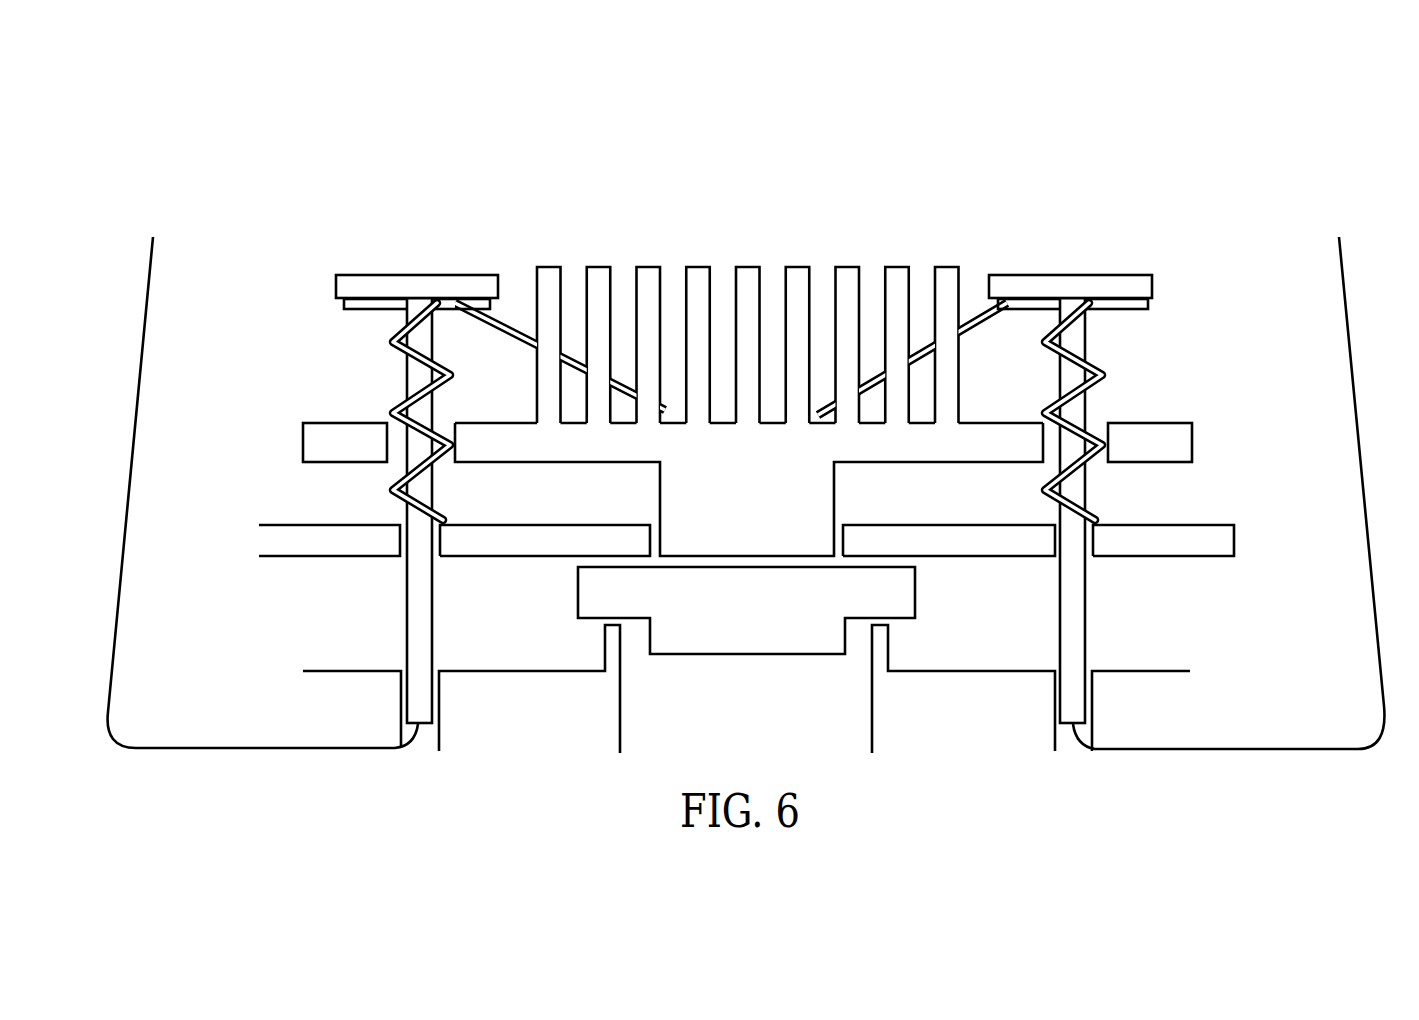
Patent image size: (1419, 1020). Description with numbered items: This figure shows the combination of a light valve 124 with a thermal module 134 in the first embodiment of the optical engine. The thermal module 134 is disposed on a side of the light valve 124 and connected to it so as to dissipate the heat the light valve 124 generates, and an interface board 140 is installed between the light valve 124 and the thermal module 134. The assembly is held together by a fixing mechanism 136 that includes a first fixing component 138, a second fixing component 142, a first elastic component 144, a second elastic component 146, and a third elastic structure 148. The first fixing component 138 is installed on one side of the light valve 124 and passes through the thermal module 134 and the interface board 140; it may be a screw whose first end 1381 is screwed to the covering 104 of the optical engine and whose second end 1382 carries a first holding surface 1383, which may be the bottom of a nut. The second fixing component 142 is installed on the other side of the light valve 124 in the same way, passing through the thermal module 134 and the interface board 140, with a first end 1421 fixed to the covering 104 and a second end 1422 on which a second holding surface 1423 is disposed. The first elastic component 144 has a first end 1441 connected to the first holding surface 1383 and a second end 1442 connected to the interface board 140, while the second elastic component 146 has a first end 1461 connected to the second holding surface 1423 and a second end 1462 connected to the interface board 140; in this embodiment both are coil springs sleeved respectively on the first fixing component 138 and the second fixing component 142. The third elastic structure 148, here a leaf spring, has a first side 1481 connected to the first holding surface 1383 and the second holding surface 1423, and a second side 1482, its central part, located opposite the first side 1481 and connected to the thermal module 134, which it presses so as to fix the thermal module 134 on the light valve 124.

The covering 104 is at (1175, 670).
The light valve 124 is at (760, 632).
The thermal module 134 is at (547, 277).
The fixing mechanism 136 is at (80, 100).
The first fixing component 138 is at (1366, 213).
The first end 1381 is at (1228, 478).
The second end 1382 is at (1153, 290).
The first holding surface 1383 is at (1152, 308).
The interface board 140 is at (1147, 540).
The second fixing component 142 is at (310, 208).
The first end 1421 is at (263, 478).
The second end 1422 is at (337, 290).
The second holding surface 1423 is at (341, 304).
The first elastic component 144 is at (1272, 389).
The first end 1441 is at (1102, 306).
The second end 1442 is at (1100, 518).
The second elastic component 146 is at (232, 363).
The first end 1461 is at (432, 304).
The second end 1462 is at (440, 520).
The third elastic structure 148 is at (1033, 167).
The first side 1481 is at (497, 307).
The second side 1482 is at (818, 415).